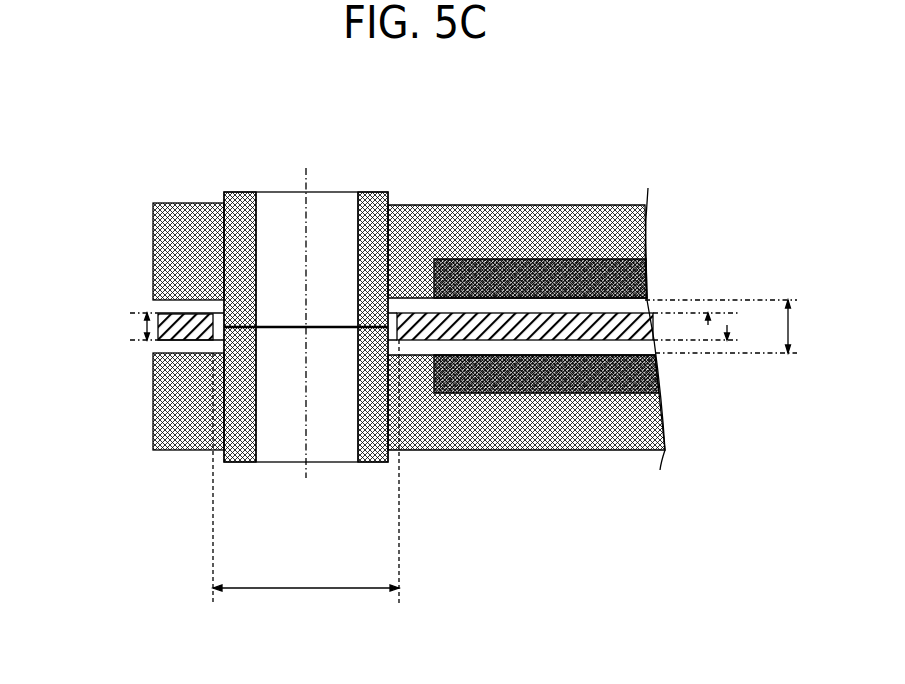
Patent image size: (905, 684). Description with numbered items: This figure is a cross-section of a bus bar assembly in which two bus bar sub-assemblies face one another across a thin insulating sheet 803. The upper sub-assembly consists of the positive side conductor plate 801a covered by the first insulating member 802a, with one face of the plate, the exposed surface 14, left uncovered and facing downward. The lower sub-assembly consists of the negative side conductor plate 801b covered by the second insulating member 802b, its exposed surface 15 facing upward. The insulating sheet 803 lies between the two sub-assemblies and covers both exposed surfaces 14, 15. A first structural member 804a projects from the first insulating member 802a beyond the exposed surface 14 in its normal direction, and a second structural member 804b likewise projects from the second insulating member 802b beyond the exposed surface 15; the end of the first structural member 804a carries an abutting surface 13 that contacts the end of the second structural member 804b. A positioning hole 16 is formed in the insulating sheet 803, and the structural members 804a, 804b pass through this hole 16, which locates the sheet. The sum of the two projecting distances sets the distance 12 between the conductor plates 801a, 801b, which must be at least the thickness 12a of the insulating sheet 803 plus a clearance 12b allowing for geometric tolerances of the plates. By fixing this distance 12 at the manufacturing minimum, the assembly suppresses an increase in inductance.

The distance 12 is at (788, 328).
The thickness of the insulating sheet 12a is at (147, 325).
The clearance 12b is at (708, 299).
The abutting surface 13 is at (283, 330).
The exposed surface 14 is at (488, 303).
The exposed surface 15 is at (510, 353).
The positioning hole 16 is at (317, 590).
The positive side conductor plate 801a is at (588, 260).
The negative side conductor plate 801b is at (593, 380).
The first insulating member 802a is at (510, 230).
The second insulating member 802b is at (538, 425).
The insulating sheet 803 is at (400, 313).
The first structural member 804a is at (247, 310).
The second structural member 804b is at (243, 373).